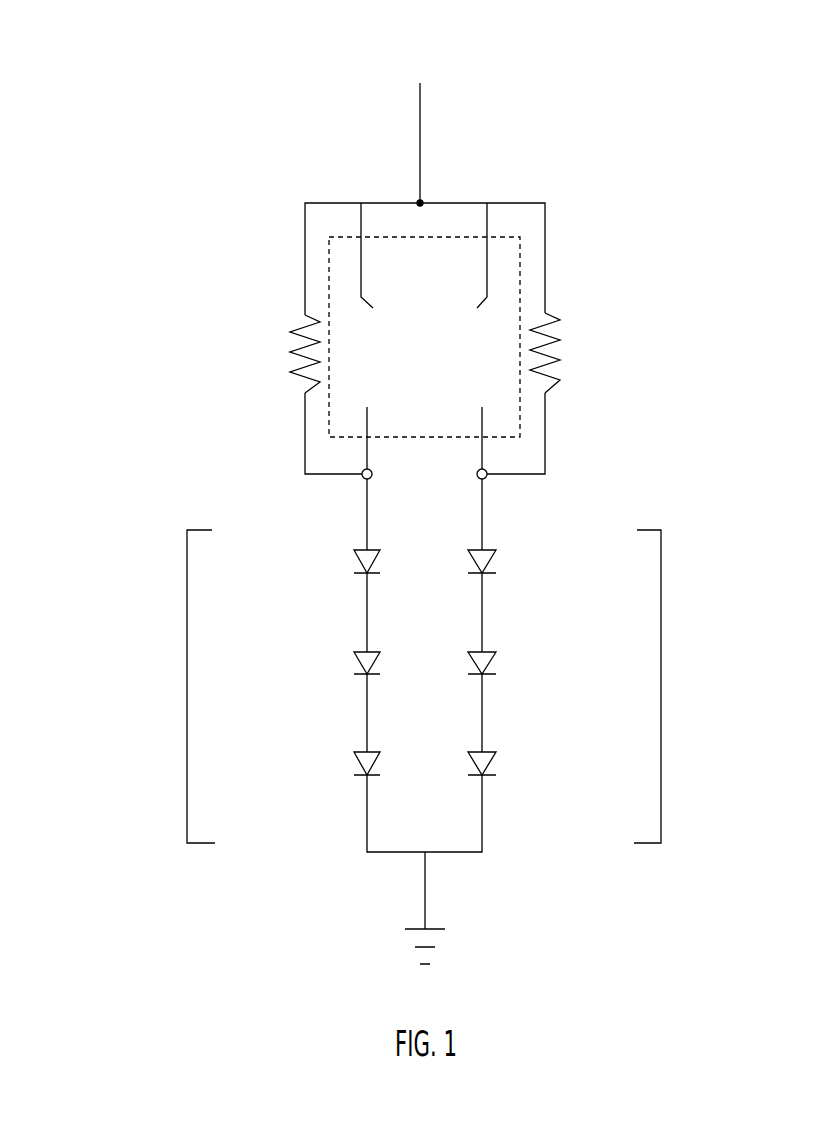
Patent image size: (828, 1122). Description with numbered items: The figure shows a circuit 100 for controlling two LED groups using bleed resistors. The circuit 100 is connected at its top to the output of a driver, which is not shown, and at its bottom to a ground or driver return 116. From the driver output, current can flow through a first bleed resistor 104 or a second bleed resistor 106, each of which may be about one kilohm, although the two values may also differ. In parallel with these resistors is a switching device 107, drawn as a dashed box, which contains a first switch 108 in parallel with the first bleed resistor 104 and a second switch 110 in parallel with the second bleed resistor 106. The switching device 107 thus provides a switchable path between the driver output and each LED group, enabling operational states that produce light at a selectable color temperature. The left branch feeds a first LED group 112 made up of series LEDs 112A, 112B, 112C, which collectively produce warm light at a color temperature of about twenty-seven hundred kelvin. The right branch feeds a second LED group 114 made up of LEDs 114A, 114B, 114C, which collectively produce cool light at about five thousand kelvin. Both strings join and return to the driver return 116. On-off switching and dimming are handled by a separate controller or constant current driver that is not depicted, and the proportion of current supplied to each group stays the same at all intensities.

The circuit 100 is at (120, 64).
The first bleed resistor 104 is at (275, 367).
The second bleed resistor 106 is at (606, 350).
The switching device 107 is at (520, 262).
The first switch 108 is at (360, 268).
The second switch 110 is at (490, 256).
The first LED group 112 is at (187, 682).
The LED 112A is at (343, 567).
The LED 112B is at (343, 667).
The LED 112C is at (343, 766).
The second LED group 114 is at (661, 682).
The LED 114A is at (503, 565).
The LED 114B is at (503, 665).
The LED 114C is at (503, 765).
The driver return 116 is at (457, 953).